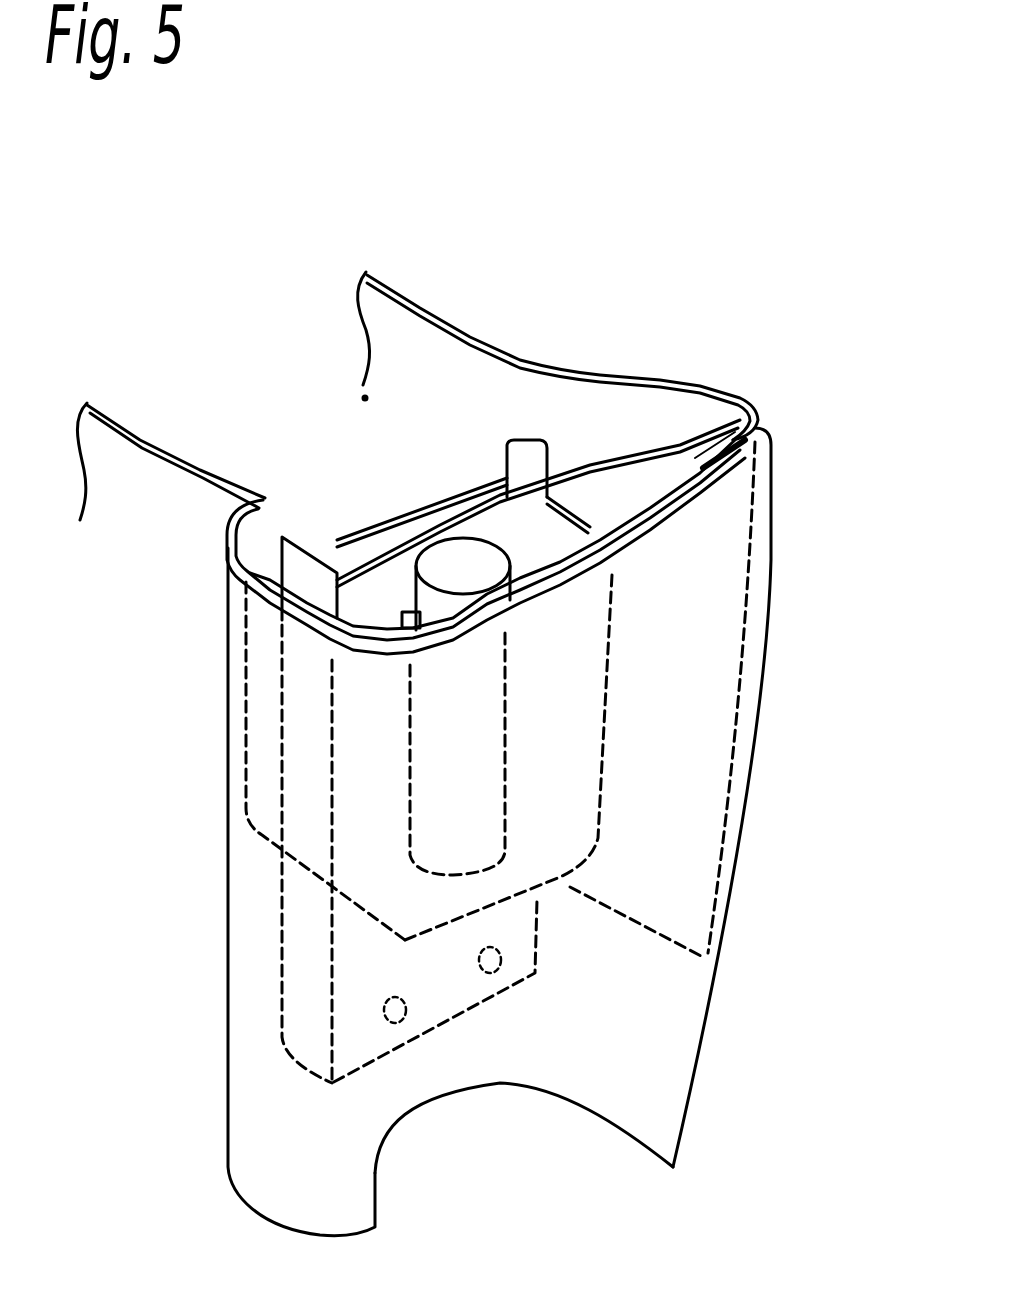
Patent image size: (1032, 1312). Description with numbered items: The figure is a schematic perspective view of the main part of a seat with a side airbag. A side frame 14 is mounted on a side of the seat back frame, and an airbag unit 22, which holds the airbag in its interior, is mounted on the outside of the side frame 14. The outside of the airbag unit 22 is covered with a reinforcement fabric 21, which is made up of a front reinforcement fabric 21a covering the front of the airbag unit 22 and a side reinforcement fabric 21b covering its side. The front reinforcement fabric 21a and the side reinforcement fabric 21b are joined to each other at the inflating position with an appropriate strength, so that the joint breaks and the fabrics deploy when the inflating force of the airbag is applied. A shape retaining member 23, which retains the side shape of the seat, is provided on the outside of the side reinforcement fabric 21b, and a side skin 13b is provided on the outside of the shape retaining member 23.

The side skin 13b is at (703, 1053).
The side frame 14 is at (500, 478).
The reinforcement fabric 21 is at (485, 398).
The front reinforcement fabric 21a is at (850, 275).
The side reinforcement fabric 21b is at (713, 223).
The airbag unit 22 is at (460, 563).
The shape retaining member 23 is at (348, 595).